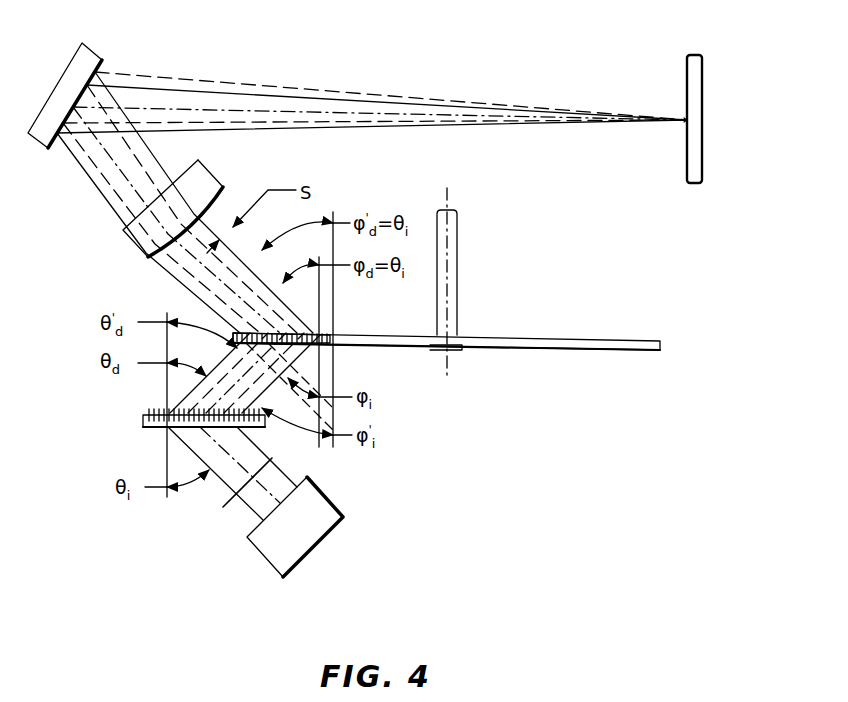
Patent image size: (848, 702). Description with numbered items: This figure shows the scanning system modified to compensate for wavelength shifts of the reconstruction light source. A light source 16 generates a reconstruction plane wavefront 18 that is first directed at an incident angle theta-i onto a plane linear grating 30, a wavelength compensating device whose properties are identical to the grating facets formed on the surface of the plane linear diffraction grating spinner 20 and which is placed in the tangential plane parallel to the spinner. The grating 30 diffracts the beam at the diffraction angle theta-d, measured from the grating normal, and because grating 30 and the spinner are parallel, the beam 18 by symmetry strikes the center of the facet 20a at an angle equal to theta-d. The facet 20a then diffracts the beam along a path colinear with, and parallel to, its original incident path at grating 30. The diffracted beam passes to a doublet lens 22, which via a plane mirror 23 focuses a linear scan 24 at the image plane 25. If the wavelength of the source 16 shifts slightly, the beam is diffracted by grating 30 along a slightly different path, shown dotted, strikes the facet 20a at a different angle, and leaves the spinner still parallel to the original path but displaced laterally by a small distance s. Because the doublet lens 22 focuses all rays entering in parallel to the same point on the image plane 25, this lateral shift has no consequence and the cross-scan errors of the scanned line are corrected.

The light source 16 is at (341, 511).
The reconstruction plane wavefront 18 is at (277, 457).
The plane linear grating 30 is at (143, 418).
The plane linear diffraction grating spinner 20 is at (548, 340).
The facet 20a is at (330, 334).
The doublet lens 22 is at (217, 183).
The plane mirror 23 is at (93, 55).
The linear scan 24 is at (652, 126).
The image plane 25 is at (693, 71).